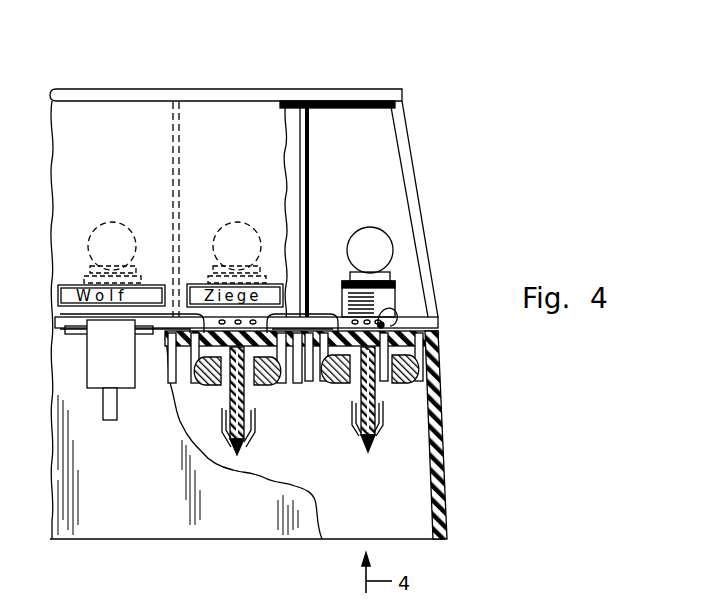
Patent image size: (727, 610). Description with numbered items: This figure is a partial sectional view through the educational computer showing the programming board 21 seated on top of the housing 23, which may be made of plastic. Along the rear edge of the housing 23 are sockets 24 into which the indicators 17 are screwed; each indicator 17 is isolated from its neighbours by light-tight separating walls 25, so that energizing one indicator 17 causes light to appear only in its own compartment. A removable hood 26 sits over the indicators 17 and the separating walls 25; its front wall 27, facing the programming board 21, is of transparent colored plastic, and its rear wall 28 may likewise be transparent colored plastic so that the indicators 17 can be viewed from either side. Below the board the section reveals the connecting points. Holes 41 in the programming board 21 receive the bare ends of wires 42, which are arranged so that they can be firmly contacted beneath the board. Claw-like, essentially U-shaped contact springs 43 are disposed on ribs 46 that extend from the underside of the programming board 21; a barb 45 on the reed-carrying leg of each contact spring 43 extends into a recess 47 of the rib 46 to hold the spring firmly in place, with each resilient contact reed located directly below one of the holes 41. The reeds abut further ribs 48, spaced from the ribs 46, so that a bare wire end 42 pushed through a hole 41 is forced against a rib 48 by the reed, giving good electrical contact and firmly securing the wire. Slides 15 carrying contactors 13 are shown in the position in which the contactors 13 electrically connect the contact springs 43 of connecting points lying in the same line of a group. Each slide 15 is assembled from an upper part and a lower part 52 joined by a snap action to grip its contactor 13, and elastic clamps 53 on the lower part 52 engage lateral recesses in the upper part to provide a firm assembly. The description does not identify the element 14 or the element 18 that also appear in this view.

The contactor 13 is at (247, 395).
The switch block 14 is at (90, 342).
The slide 15 is at (256, 428).
The indicator 17 is at (231, 226).
The contact spring 18 is at (372, 312).
The programming board 21 is at (430, 326).
The housing 23 is at (441, 472).
The socket 24 is at (342, 292).
The separating wall 25 is at (182, 179).
The removable hood 26 is at (227, 96).
The front wall 27 is at (108, 118).
The rear wall 28 is at (352, 125).
The hole 41 is at (398, 322).
The wire 42 is at (185, 314).
The contact spring 43 is at (204, 387).
The barb 45 is at (321, 348).
The rib 46 is at (220, 386).
The recess 47 is at (410, 357).
The rib 48 is at (185, 377).
The lower part 52 is at (239, 446).
The elastic clamp 53 is at (231, 424).